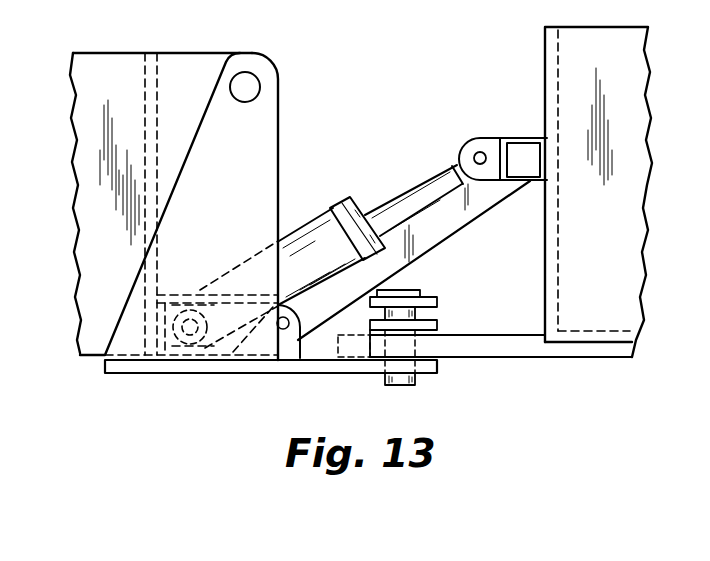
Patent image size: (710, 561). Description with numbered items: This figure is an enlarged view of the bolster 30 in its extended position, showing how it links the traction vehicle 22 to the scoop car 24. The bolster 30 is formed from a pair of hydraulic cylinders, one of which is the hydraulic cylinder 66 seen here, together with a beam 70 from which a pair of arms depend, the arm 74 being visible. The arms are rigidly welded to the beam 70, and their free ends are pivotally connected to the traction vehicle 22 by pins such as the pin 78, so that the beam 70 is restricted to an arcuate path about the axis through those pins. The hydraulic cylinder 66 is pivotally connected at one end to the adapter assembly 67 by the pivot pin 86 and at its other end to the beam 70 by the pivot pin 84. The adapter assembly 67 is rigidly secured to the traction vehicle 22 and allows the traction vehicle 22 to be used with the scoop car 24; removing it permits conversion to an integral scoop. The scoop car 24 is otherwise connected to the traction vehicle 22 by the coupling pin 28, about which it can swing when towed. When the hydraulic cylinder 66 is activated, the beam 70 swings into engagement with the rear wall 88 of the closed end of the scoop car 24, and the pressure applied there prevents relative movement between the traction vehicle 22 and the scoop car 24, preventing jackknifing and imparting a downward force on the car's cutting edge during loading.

The traction vehicle 22 is at (168, 53).
The scoop car 24 is at (545, 47).
The coupling pin 28 is at (425, 292).
The bolster assembly 30 is at (380, 188).
The hydraulic cylinder 66 is at (315, 222).
The adapter assembly 67 is at (340, 373).
The beam 70 is at (523, 140).
The arm 74 is at (445, 237).
The pin 78 is at (285, 340).
The pivot pin 84 is at (482, 150).
The pivot pin 86 is at (184, 350).
The rear wall 88 is at (553, 226).